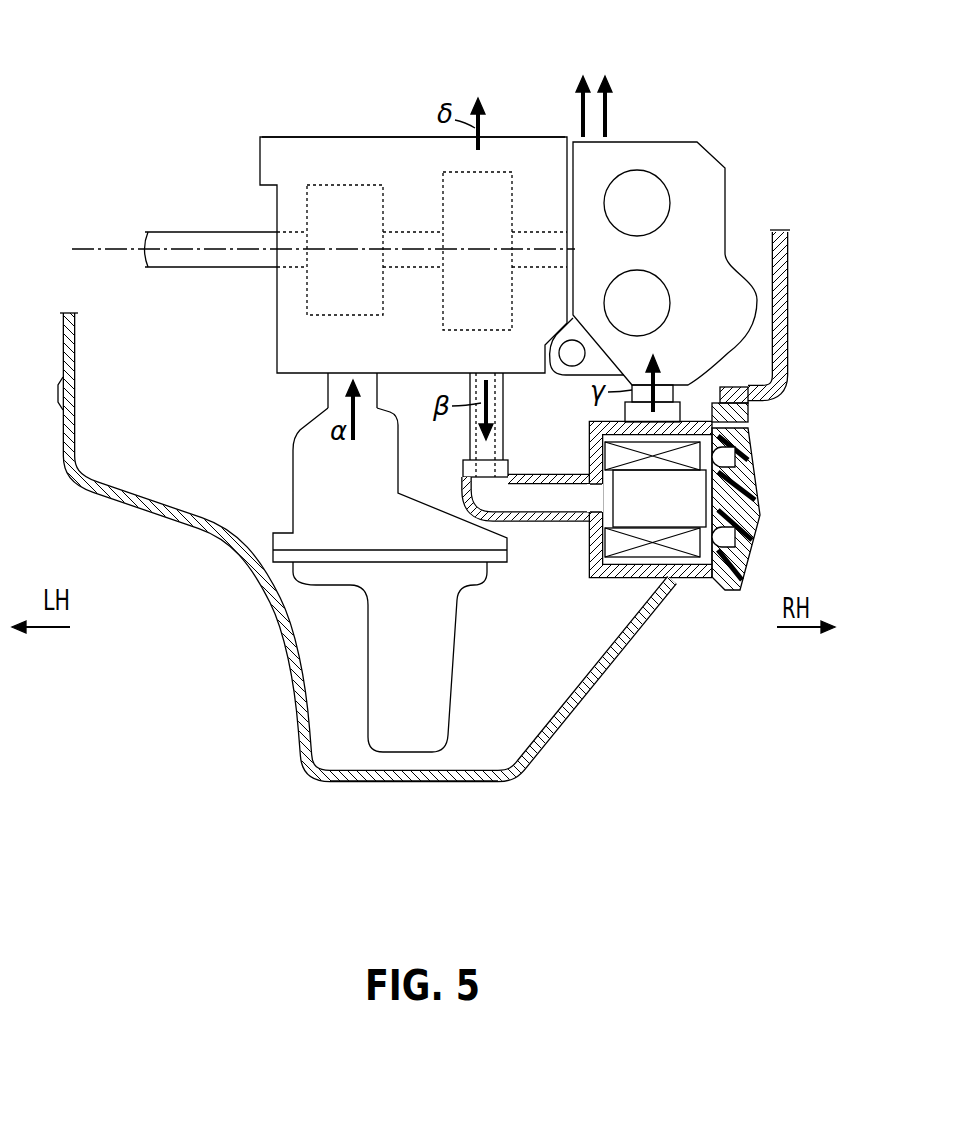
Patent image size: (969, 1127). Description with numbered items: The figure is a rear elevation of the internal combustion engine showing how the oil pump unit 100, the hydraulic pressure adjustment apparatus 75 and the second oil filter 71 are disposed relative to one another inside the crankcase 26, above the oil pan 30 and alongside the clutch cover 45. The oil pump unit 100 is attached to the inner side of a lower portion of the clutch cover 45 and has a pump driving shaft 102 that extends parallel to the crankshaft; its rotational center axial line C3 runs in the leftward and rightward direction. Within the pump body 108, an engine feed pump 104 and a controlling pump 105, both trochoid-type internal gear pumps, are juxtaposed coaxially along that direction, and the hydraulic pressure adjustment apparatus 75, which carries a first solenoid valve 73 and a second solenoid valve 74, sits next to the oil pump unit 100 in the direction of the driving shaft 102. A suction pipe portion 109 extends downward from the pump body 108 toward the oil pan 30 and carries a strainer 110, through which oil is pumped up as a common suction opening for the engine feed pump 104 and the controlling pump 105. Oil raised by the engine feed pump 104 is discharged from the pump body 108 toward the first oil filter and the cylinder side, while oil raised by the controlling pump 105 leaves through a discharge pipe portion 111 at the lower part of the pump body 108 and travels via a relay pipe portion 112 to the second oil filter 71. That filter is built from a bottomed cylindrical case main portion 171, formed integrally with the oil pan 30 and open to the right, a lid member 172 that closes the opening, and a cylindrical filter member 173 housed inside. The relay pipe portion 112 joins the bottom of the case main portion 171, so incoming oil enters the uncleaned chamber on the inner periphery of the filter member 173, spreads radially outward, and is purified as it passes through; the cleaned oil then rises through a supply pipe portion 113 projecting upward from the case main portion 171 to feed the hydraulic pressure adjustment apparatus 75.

The oil pump unit 100 is at (293, 132).
The pump body 108 is at (378, 137).
The controlling pump 105 is at (345, 185).
The engine feed pump 104 is at (500, 172).
The pump driving shaft 102 is at (186, 232).
The rotational center axial line C3 is at (95, 247).
The hydraulic pressure adjustment apparatus 75 is at (676, 217).
The first solenoid valve 73 is at (662, 182).
The second solenoid valve 74 is at (653, 274).
The suction pipe portion 109 is at (328, 388).
The strainer 110 is at (367, 667).
The discharge pipe portion 111 is at (470, 437).
The relay pipe portion 112 is at (548, 522).
The second oil filter 71 is at (690, 558).
The case main portion 171 is at (612, 578).
The filter member 173 is at (640, 553).
The lid member 172 is at (745, 555).
The crankcase 26 is at (63, 346).
The oil pan 30 is at (312, 773).
The clutch cover 45 is at (777, 284).
The supply pipe portion 113 is at (748, 408).